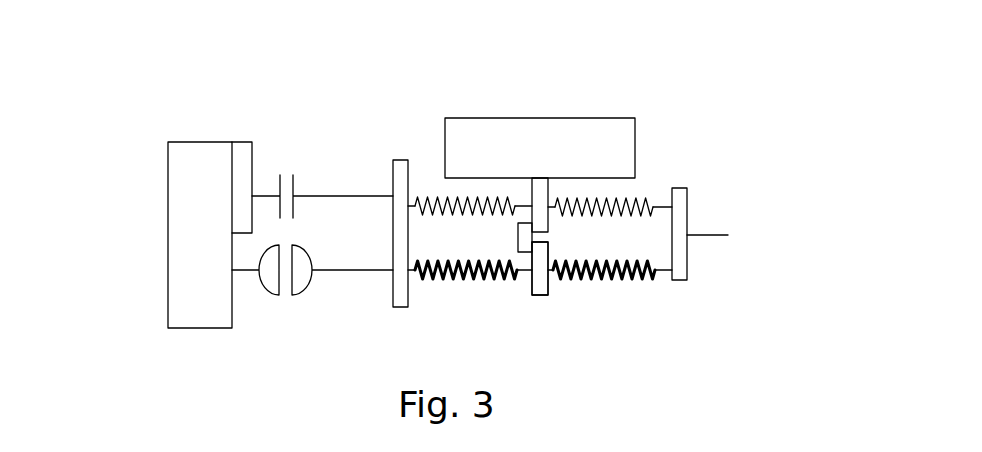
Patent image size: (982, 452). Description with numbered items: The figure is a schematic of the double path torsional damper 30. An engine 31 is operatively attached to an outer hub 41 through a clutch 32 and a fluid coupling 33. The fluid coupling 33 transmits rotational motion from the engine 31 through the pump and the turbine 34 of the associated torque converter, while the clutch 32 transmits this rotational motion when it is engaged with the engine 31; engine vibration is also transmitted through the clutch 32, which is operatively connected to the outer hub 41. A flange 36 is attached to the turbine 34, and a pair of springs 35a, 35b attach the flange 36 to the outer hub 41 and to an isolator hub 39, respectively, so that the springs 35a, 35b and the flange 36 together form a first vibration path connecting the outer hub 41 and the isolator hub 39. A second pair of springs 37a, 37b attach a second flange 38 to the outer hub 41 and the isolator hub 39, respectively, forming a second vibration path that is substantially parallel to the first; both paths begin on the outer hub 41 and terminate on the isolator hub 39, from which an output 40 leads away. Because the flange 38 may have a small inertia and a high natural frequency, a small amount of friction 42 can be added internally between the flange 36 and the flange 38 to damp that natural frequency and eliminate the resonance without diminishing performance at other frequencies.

The double path torsional damper 30 is at (687, 127).
The engine 31 is at (183, 142).
The clutch 32 is at (285, 175).
The fluid coupling 33 is at (285, 298).
The turbine 34 is at (482, 118).
The spring 35a is at (437, 195).
The spring 35b is at (642, 197).
The flange 36 is at (549, 196).
The spring 37a is at (458, 283).
The spring 37b is at (635, 282).
The flange 38 is at (540, 295).
The isolator hub 39 is at (680, 188).
The output shaft 40 is at (712, 234).
The outer hub 41 is at (398, 160).
The friction 42 is at (524, 226).